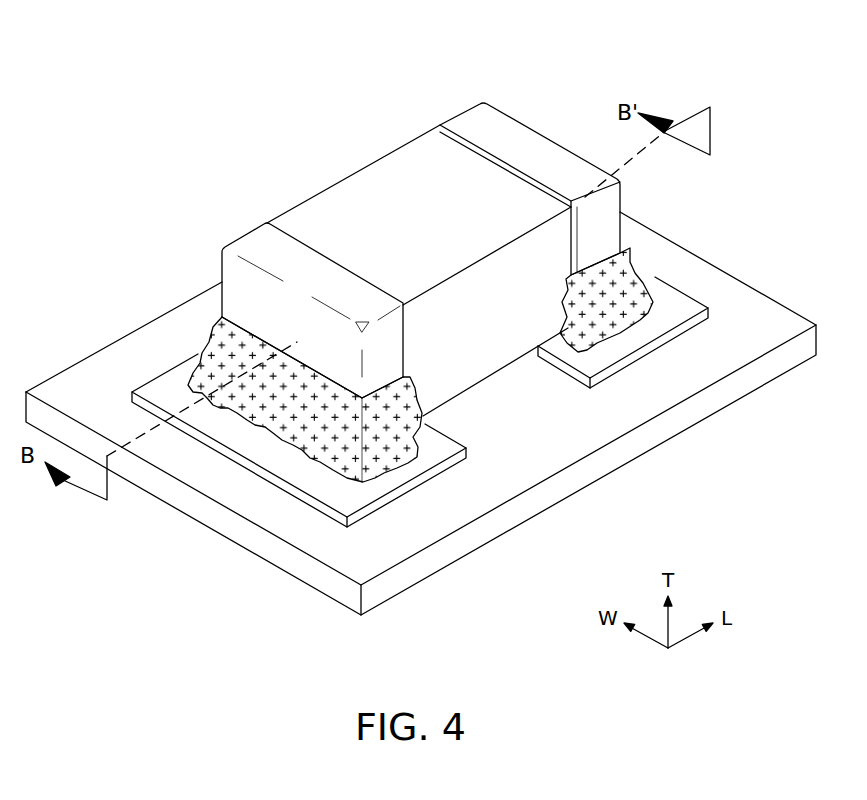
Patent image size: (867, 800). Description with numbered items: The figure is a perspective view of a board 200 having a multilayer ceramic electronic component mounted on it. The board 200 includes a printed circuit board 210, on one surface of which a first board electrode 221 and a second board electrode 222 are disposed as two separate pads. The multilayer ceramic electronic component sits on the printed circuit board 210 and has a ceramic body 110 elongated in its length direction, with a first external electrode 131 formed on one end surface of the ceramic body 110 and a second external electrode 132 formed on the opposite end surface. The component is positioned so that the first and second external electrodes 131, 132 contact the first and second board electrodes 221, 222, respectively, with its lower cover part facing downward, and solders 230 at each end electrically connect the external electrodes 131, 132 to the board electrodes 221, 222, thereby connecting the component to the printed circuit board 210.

The board having a multilayer ceramic electronic component 200 is at (222, 38).
The ceramic body 110 is at (365, 176).
The first external electrode 131 is at (262, 244).
The second external electrode 132 is at (470, 118).
The printed circuit board 210 is at (540, 460).
The first board electrode 221 is at (353, 497).
The second board electrode 222 is at (670, 316).
The solder 230 is at (393, 437).